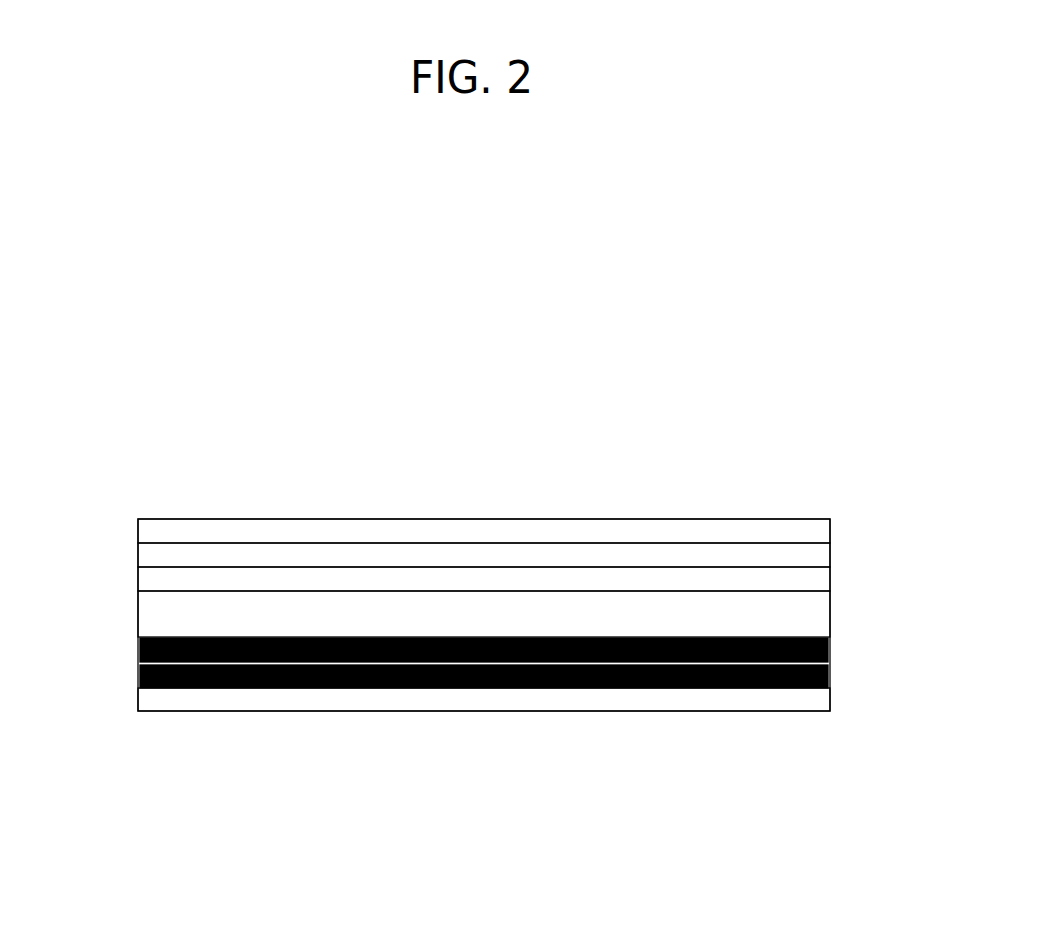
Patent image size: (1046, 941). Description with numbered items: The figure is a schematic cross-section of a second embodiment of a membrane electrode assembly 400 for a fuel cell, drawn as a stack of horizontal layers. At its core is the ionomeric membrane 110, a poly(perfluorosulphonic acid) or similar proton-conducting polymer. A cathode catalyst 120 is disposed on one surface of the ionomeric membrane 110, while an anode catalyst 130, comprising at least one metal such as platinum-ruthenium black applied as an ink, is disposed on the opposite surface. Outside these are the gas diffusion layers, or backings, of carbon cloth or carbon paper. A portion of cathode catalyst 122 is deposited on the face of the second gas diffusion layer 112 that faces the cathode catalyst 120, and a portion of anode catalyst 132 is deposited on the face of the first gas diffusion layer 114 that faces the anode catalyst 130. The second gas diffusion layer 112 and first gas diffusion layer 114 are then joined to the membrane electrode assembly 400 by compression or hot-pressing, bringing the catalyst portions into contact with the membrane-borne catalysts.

The membrane electrode assembly 400 is at (490, 323).
The ionomeric membrane 110 is at (153, 627).
The second gas diffusion layer 112 is at (818, 531).
The first gas diffusion layer 114 is at (818, 699).
The cathode catalyst 120 is at (818, 579).
The portion of cathode catalyst 122 is at (150, 555).
The anode catalyst 130 is at (830, 654).
The portion of anode catalyst 132 is at (148, 675).